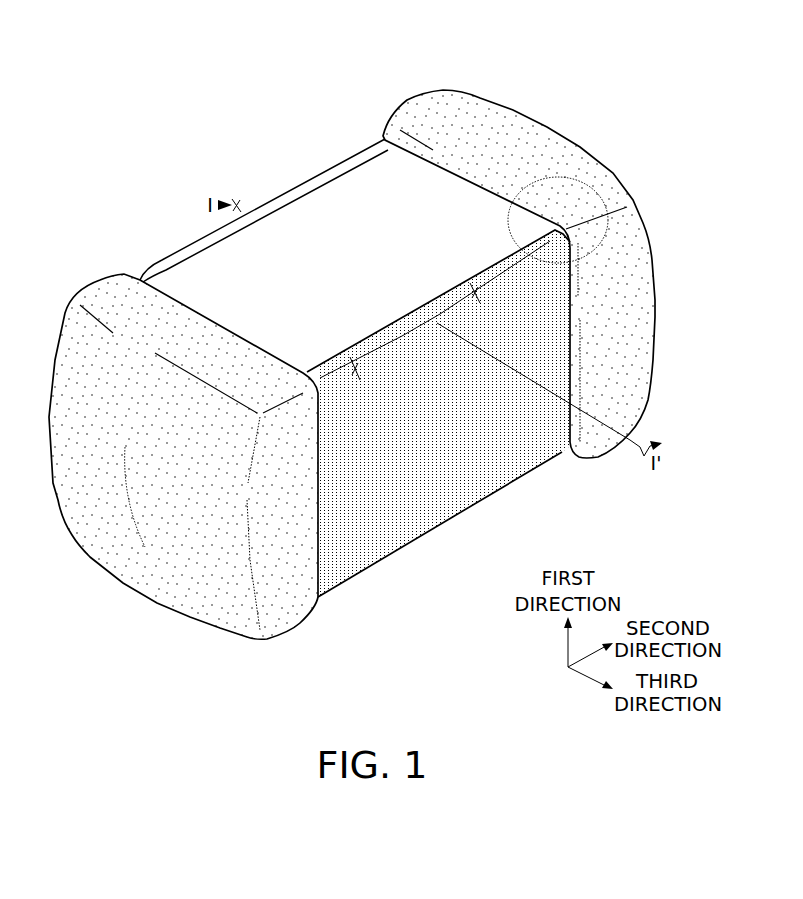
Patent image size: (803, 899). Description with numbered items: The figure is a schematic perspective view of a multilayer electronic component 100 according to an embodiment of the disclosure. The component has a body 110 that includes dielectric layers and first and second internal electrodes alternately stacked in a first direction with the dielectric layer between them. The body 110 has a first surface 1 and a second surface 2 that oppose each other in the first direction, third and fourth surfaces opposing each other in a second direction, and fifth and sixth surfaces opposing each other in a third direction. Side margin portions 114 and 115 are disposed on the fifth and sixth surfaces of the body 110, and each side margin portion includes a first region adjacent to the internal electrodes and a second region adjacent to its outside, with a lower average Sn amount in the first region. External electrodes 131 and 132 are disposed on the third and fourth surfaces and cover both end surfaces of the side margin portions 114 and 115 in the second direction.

The multilayer electronic component 100 is at (105, 32).
The body 110 is at (360, 363).
The side margin portion 114 is at (271, 201).
The side margin portion 115 is at (568, 178).
The external electrode 131 is at (104, 287).
The external electrode 132 is at (426, 104).
The first surface 1 is at (410, 552).
The second surface 2 is at (363, 178).